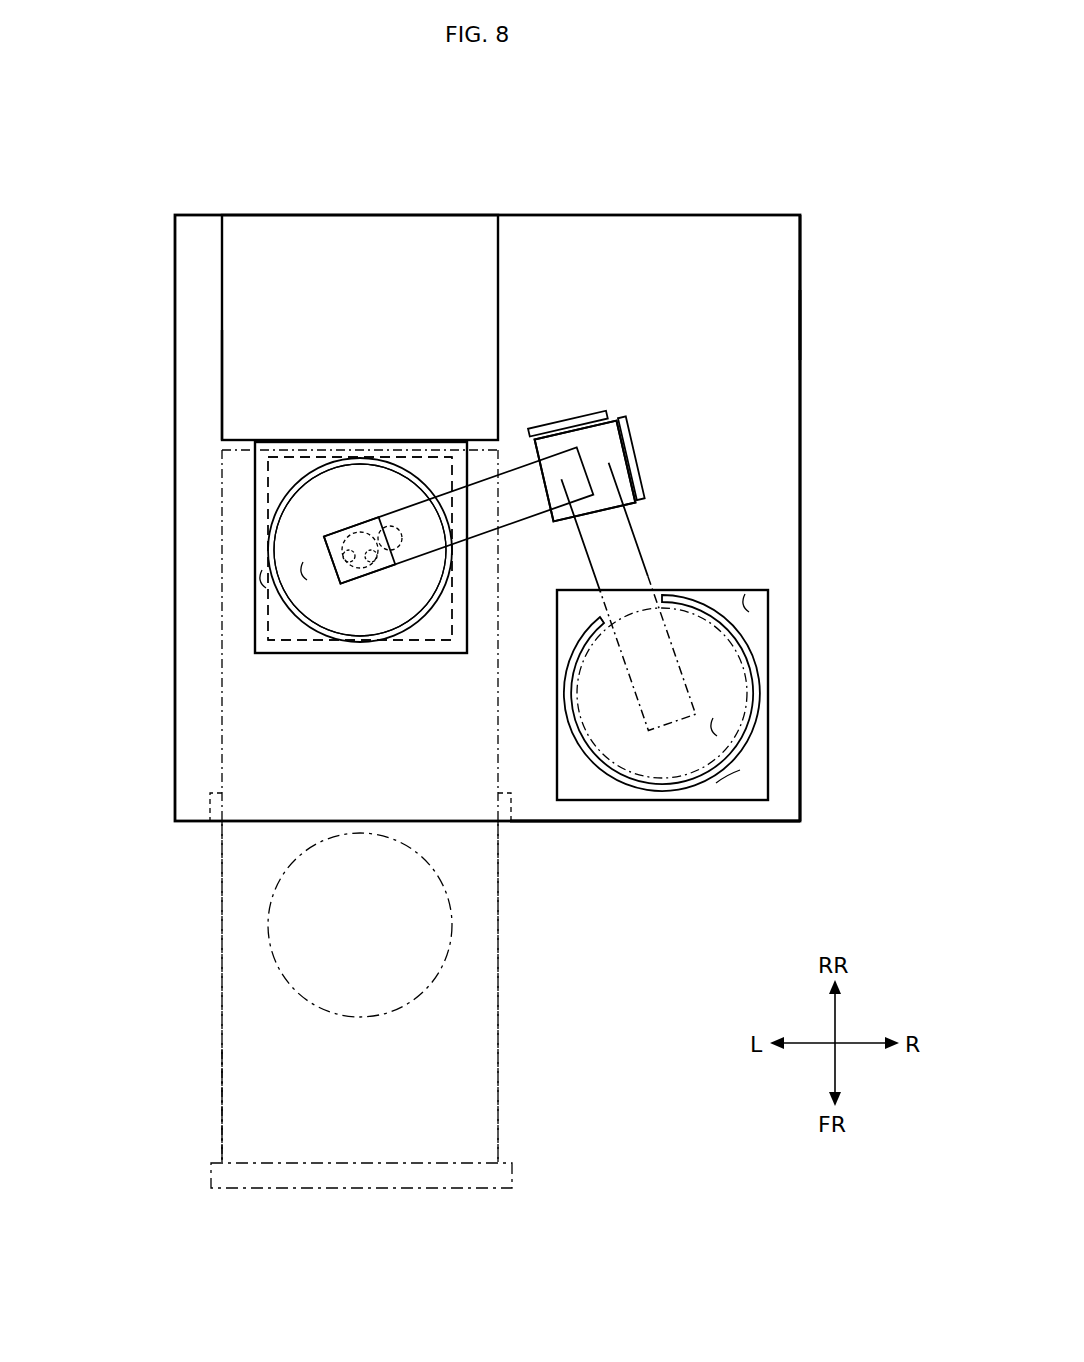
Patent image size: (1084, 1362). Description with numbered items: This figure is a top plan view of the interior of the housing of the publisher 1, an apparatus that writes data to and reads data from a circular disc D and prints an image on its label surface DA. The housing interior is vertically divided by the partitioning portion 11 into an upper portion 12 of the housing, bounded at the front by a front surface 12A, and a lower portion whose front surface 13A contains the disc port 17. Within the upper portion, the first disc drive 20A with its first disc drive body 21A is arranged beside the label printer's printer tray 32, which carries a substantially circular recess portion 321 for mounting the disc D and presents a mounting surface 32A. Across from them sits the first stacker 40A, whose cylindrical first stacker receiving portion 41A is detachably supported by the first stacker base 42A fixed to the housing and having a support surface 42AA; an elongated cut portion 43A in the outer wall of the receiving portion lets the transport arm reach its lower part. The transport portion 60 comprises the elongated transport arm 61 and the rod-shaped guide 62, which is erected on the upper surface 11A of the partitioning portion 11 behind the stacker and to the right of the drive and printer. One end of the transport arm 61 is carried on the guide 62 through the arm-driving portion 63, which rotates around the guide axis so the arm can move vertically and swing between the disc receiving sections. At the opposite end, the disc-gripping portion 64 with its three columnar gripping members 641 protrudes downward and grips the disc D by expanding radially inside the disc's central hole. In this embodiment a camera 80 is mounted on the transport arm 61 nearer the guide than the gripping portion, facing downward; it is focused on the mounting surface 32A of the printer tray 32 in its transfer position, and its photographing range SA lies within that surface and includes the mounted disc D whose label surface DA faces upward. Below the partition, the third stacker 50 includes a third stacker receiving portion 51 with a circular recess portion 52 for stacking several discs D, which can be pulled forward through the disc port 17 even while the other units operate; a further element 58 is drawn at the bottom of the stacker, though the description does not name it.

The publisher 1 is at (584, 196).
The partitioning portion 11 is at (705, 310).
The upper surface of the partitioning portion 11A is at (766, 333).
The upper portion of the housing 12 is at (802, 248).
The front surface of the upper portion 12A is at (655, 822).
The front surface of the lower portion 13A is at (584, 822).
The disc port 17 is at (497, 816).
The first disc drive 20A is at (235, 333).
The first disc drive body 21A is at (222, 403).
The printer tray 32 is at (253, 466).
The recess portion 321 is at (273, 503).
The mounting surface 32A is at (258, 578).
The first stacker 40A is at (772, 690).
The first stacker receiving portion 41A is at (748, 650).
The first stacker base 42A is at (748, 589).
The support surface 42AA is at (752, 600).
The cut portion 43A is at (645, 598).
The third stacker 50 is at (537, 1105).
The third stacker receiving portion 51 is at (253, 1128).
The recess portion 52 is at (445, 953).
The base plate 58 is at (326, 1190).
The transport portion 60 is at (672, 418).
The transport arm 61 is at (625, 543).
The guide 62 is at (585, 420).
The arm-driving portion 63 is at (636, 416).
The disc-gripping portion 64 is at (340, 535).
The gripping members 641 is at (362, 524).
The camera 80 is at (400, 520).
The disc D is at (273, 548).
The label surface DA is at (303, 566).
The photographing range SA is at (305, 643).